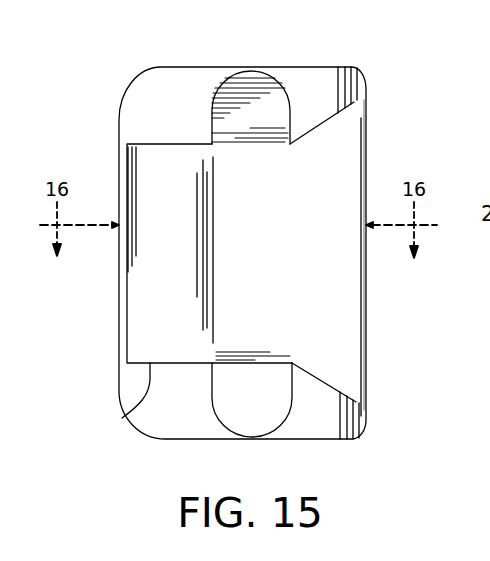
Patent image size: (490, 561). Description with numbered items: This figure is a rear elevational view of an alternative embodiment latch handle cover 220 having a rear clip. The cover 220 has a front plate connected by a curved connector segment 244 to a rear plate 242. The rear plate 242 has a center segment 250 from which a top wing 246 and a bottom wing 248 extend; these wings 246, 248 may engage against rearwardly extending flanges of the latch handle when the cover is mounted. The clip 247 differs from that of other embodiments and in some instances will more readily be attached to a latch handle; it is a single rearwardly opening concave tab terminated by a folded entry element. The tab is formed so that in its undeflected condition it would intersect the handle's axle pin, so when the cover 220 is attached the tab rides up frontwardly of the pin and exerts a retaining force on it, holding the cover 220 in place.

The cover 220 is at (94, 112).
The rear plate 242 is at (318, 264).
The curved connector segment 244 is at (366, 314).
The top wing 246 is at (278, 83).
The clip 247 is at (133, 414).
The bottom wing 248 is at (206, 403).
The center segment 250 is at (241, 284).